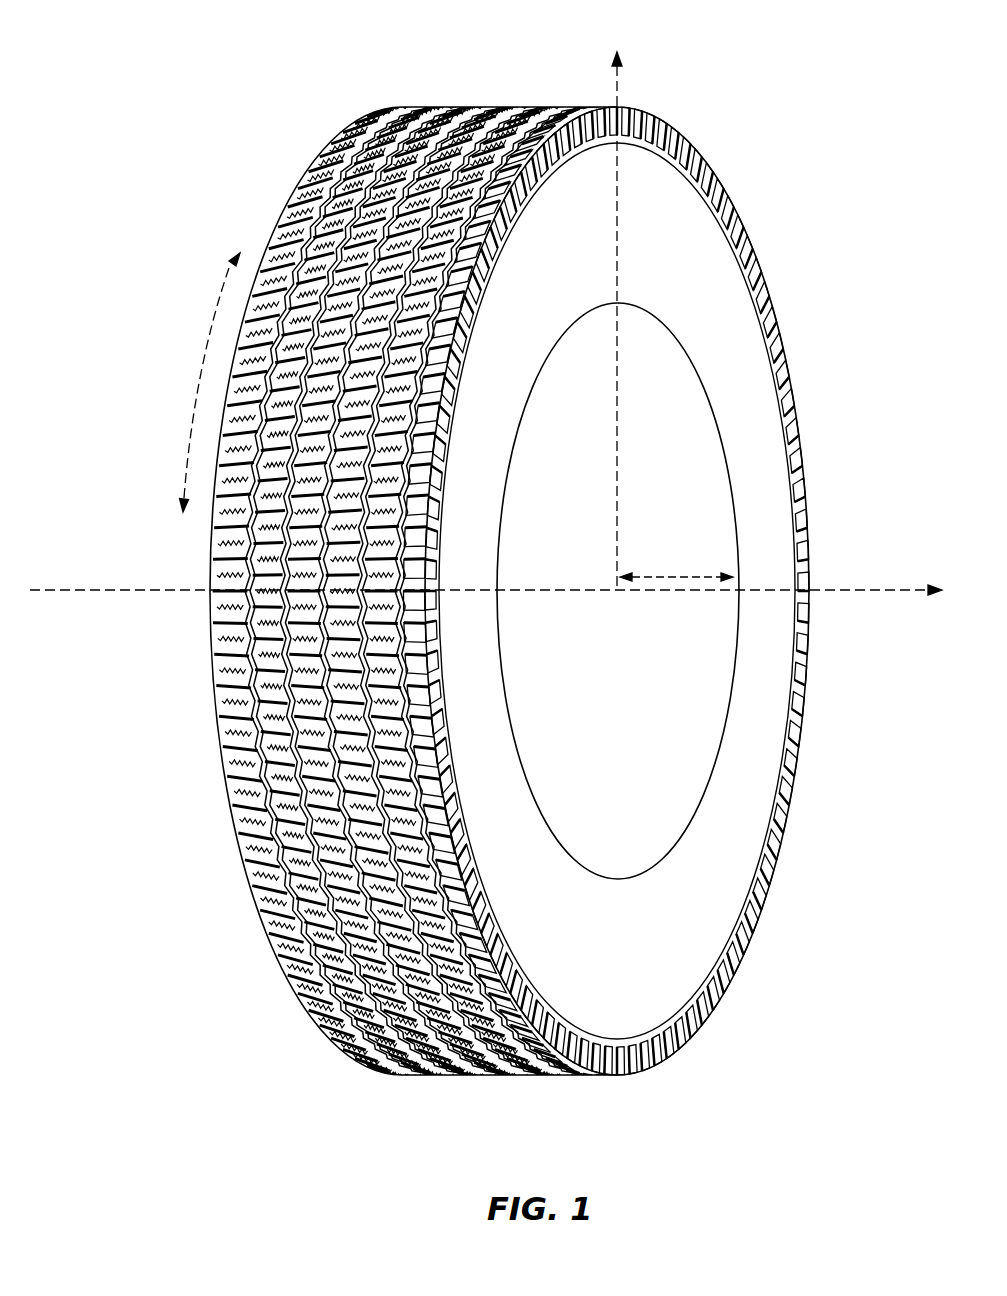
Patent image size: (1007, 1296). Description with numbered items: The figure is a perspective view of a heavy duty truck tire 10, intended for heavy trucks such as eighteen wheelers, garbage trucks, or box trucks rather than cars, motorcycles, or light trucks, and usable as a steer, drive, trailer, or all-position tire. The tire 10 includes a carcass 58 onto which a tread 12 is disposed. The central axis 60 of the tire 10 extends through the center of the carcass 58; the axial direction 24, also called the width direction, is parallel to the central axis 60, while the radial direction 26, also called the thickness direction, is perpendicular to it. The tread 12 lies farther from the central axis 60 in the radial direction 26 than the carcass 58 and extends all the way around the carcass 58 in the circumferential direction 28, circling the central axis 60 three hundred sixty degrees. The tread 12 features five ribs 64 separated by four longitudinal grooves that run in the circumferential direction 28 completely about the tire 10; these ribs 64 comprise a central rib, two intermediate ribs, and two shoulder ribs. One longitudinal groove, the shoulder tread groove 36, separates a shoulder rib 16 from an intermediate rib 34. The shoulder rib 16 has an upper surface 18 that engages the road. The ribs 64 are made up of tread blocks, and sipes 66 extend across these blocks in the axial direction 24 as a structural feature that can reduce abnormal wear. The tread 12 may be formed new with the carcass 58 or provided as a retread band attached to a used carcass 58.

The tire 10 is at (280, 40).
The tread 12 is at (355, 765).
The shoulder rib 16 is at (222, 680).
The upper surface 18 is at (307, 680).
The axial direction 24 is at (686, 574).
The radial direction 26 is at (618, 90).
The circumferential direction 28 is at (203, 374).
The intermediate rib 34 is at (263, 597).
The shoulder tread groove 36 is at (337, 197).
The carcass 58 is at (737, 297).
The central axis 60 is at (866, 591).
The ribs 64 is at (372, 127).
The sipes 66 is at (260, 520).